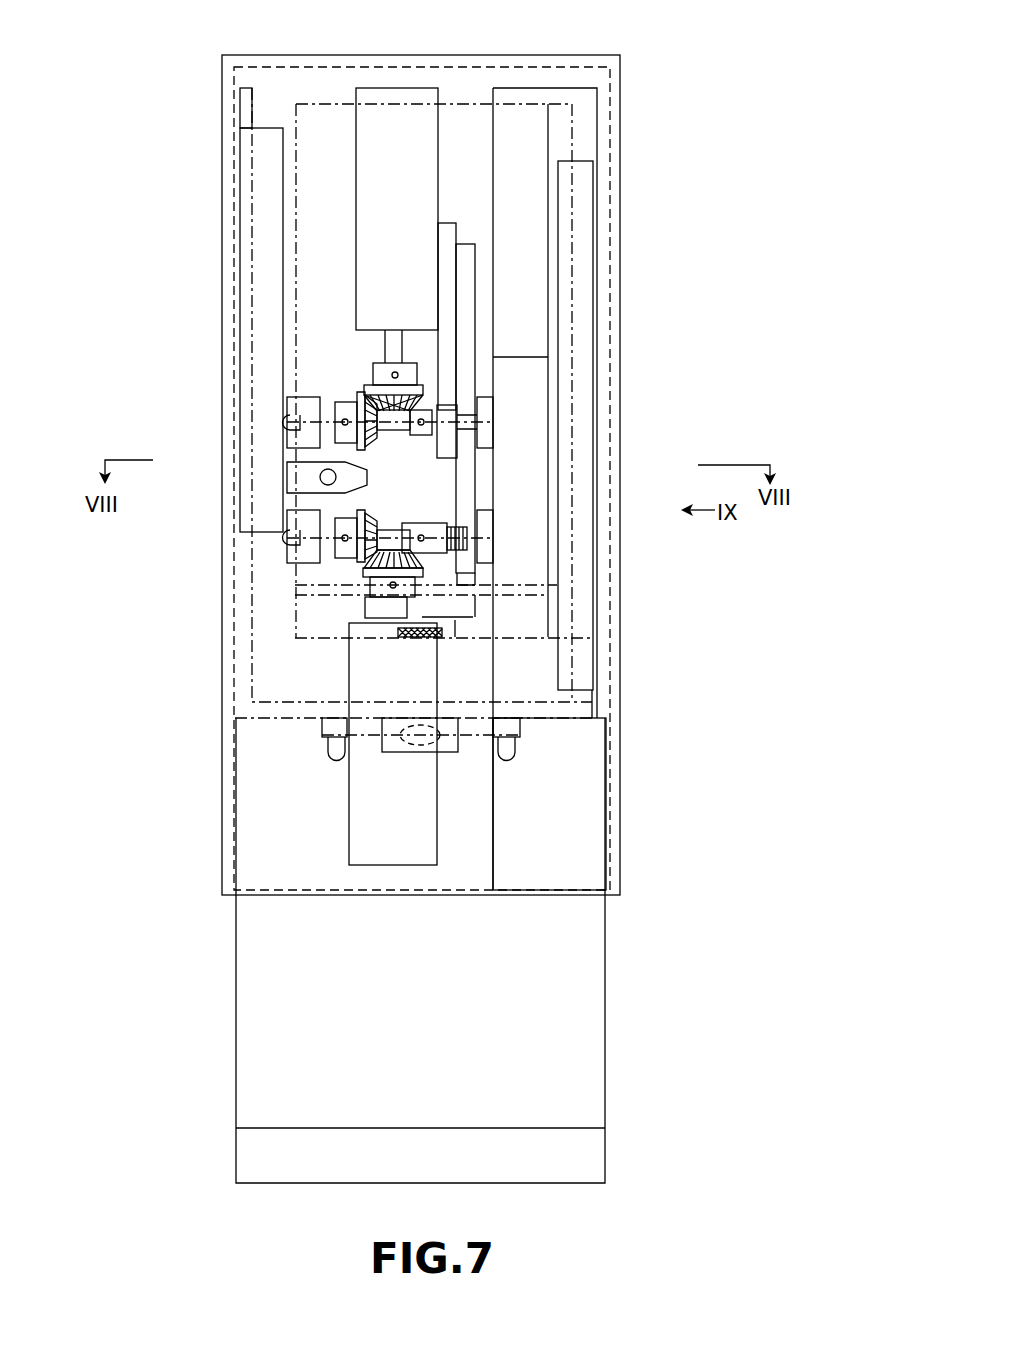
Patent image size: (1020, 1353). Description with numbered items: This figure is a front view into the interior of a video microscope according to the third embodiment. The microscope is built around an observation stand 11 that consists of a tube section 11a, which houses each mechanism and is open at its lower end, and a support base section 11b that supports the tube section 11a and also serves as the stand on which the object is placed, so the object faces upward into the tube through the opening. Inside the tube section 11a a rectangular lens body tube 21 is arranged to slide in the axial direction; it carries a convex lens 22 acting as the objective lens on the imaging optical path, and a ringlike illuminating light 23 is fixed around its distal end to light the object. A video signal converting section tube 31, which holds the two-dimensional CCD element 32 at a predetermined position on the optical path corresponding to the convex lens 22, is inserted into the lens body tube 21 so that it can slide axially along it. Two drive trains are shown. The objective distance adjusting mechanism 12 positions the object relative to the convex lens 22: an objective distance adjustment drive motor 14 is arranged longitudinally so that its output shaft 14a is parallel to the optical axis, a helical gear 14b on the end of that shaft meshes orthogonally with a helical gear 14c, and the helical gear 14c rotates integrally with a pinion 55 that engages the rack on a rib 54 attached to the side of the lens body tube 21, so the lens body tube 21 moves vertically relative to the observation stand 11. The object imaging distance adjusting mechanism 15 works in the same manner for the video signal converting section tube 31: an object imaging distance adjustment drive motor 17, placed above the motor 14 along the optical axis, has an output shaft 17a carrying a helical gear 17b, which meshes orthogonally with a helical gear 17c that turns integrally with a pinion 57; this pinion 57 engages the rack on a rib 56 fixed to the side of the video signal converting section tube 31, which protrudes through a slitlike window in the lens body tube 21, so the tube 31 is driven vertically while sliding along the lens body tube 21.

The observation stand 11 is at (652, 777).
The tube section 11a is at (620, 242).
The support base section 11b is at (605, 1088).
The objective distance adjusting mechanism 12 is at (433, 512).
The objective distance adjustment drive motor 14 is at (358, 848).
The output shaft 14a is at (390, 607).
The helical gear 14b is at (425, 571).
The helical gear 14c is at (352, 520).
The object imaging distance adjusting mechanism 15 is at (337, 345).
The object imaging distance adjustment drive motor 17 is at (400, 125).
The output shaft 17a is at (392, 350).
The helical gear 17b is at (367, 388).
The helical gear 17c is at (373, 394).
The lens body tube 21 is at (243, 643).
The convex lens 22 is at (420, 747).
The illuminating light 23 is at (325, 753).
The video signal converting section tube 31 is at (315, 104).
The two-dimensional CCD element 32 is at (427, 638).
The rib 54 is at (470, 245).
The pinion 55 is at (465, 523).
The rib 56 is at (450, 224).
The pinion 57 is at (448, 410).